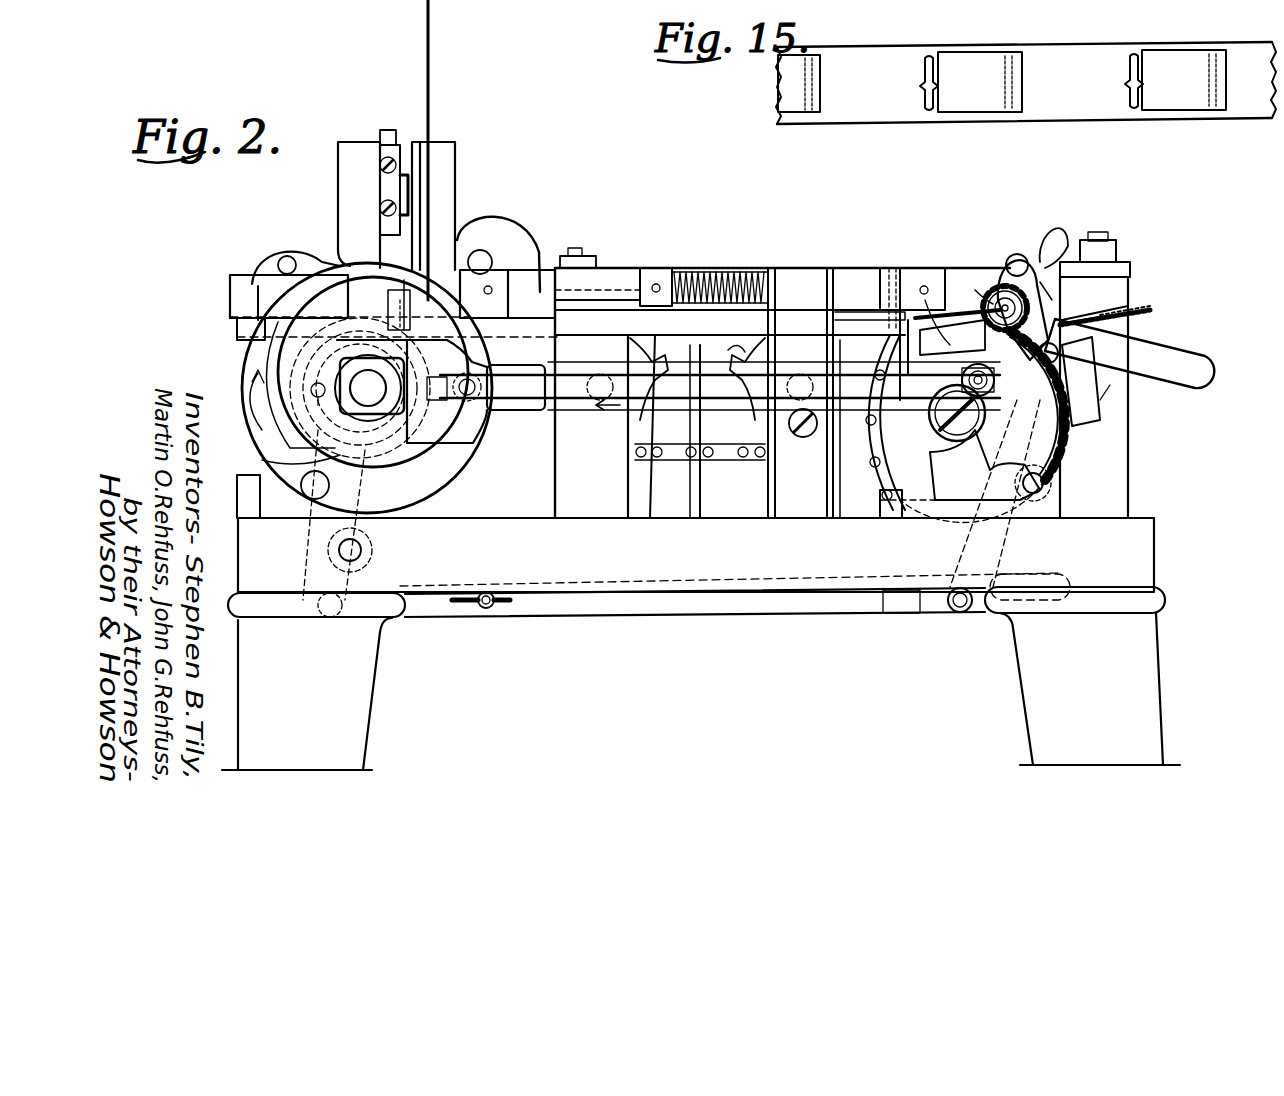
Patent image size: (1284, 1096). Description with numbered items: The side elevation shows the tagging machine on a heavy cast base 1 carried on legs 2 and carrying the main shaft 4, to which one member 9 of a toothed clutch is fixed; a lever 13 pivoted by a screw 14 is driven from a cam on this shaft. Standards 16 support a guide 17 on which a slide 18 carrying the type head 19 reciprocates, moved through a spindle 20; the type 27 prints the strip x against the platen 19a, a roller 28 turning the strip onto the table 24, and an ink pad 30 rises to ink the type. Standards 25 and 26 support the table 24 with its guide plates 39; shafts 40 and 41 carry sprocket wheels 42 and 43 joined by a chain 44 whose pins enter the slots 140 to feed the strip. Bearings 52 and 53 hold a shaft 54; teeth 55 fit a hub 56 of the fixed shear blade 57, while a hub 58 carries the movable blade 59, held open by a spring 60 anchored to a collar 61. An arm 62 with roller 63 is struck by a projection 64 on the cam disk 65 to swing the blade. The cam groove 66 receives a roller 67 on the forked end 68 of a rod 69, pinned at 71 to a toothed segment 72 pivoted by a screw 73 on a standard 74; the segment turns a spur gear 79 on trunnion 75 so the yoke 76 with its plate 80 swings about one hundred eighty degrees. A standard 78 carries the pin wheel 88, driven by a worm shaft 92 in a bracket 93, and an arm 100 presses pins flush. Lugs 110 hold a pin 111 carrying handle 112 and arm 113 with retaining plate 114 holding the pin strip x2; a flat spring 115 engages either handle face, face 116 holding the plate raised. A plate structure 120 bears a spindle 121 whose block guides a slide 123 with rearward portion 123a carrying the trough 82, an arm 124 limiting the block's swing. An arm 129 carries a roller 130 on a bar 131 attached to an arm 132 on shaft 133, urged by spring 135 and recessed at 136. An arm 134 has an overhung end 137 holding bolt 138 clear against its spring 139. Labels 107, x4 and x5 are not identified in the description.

In FIG. 2, the supporting base 1 is at (250, 519).
In FIG. 2, the legs or standards 2 is at (252, 648).
In FIG. 2, the main shaft 4 is at (369, 388).
In FIG. 2, the clutch member 9 is at (298, 356).
In FIG. 2, the lever 13 is at (614, 265).
In FIG. 2, the screw 14 is at (574, 255).
In FIG. 2, the standards 16 is at (268, 488).
In FIG. 2, the guide 17 is at (394, 296).
In FIG. 2, the slide 18 is at (232, 287).
In FIG. 2, the type carrying head 19 is at (344, 163).
In FIG. 2, the strip guiding structure 19a is at (445, 178).
In FIG. 2, the spindle 20 is at (300, 488).
In FIG. 2, the table structure 24 is at (238, 330).
In FIG. 2, the standards 25 is at (836, 458).
In FIG. 2, the standards 26 is at (607, 426).
In FIG. 2, the type 27 is at (400, 197).
In FIG. 2, the roller 28 is at (505, 230).
In FIG. 2, the ink pad 30 is at (404, 240).
In FIG. 2, the guide plates 39 is at (584, 308).
In FIG. 2, the shaft 40 is at (800, 374).
In FIG. 2, the shaft 41 is at (600, 374).
In FIG. 2, the sprocket wheel 42 is at (755, 408).
In FIG. 2, the sprocket wheel 43 is at (650, 428).
In FIG. 2, the sprocket chain 44 is at (726, 462).
In FIG. 2, the bearing 52 is at (540, 268).
In FIG. 2, the bearing 53 is at (806, 266).
In FIG. 2, the shaft 54 is at (622, 282).
In FIG. 2, the teeth 55 is at (874, 266).
In FIG. 2, the hub 56 is at (884, 278).
In FIG. 2, the shear blade 57 is at (890, 268).
In FIG. 2, the hub 58 is at (912, 268).
In FIG. 2, the shear blade 59 is at (902, 336).
In FIG. 2, the spring 60 is at (716, 270).
In FIG. 2, the collar 61 is at (662, 268).
In FIG. 2, the arm 62 is at (458, 280).
In FIG. 2, the roller 63 is at (447, 398).
In FIG. 2, the side projection 64 is at (366, 316).
In FIG. 2, the cam disk 65 is at (248, 352).
In FIG. 2, the cam groove 66 is at (338, 282).
In FIG. 2, the roller 67 is at (497, 410).
In FIG. 2, the forked end 68 is at (330, 322).
In FIG. 2, the rod 69 is at (575, 400).
In FIG. 2, the pin 71 is at (986, 380).
In FIG. 2, the toothed segment 72 is at (1052, 432).
In FIG. 2, the screw 73 is at (945, 440).
In FIG. 2, the bracket or standard 74 is at (935, 487).
In FIG. 2, the trunnion 75 is at (995, 290).
In FIG. 2, the yoke 76 is at (952, 337).
In FIG. 2, the bracket or standard 78 is at (1128, 283).
In FIG. 2, the spur gear 79 is at (936, 268).
In FIG. 2, the clamping plate 80 is at (957, 320).
In FIG. 2, the trough or box 82 is at (1185, 386).
In FIG. 2, the wheel 88 is at (1125, 321).
In FIG. 2, the shaft 92 is at (825, 422).
In FIG. 2, the bracket 93 is at (692, 497).
In FIG. 2, the arm 100 is at (1060, 352).
In FIG. 2, the bolt 107 is at (1098, 244).
In FIG. 2, the lugs 110 is at (1028, 245).
In FIG. 2, the spindle 111 is at (1016, 250).
In FIG. 2, the handle arm 112 is at (1060, 228).
In FIG. 2, the arm 113 is at (1044, 280).
In FIG. 2, the retaining plate 114 is at (1090, 312).
In FIG. 2, the flat spring 115 is at (1064, 265).
In FIG. 2, the flat face 116 is at (988, 270).
In FIG. 2, the plate structure 120 is at (880, 520).
In FIG. 2, the spindle 121 is at (1044, 484).
In FIG. 2, the slide 123 is at (1070, 404).
In FIG. 2, the projecting portion 123a is at (1130, 385).
In FIG. 2, the arm 124 is at (968, 475).
In FIG. 2, the arm 129 is at (1010, 531).
In FIG. 2, the roller 130 is at (958, 612).
In FIG. 2, the bar 131 is at (430, 622).
In FIG. 2, the arm 132 is at (325, 572).
In FIG. 2, the shaft 133 is at (350, 550).
In FIG. 2, the arm 134 is at (278, 462).
In FIG. 2, the spring 135 is at (478, 608).
In FIG. 2, the recess 136 is at (1026, 582).
In FIG. 2, the overhung end 137 is at (268, 400).
In FIG. 2, the bolt 138 is at (262, 430).
In FIG. 2, the spring 139 is at (320, 402).
In FIG. 15, the slots 140 is at (925, 90).
In FIG. 2, the strip x is at (439, 150).
In FIG. 15, the strip x is at (834, 112).
In FIG. 2, the pin carrying strip x2 is at (1145, 306).
In FIG. 15, the tag x4 is at (982, 52).
In FIG. 15, the tag section x5 is at (878, 48).